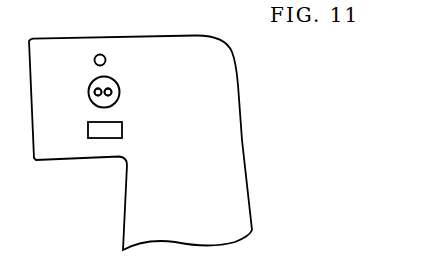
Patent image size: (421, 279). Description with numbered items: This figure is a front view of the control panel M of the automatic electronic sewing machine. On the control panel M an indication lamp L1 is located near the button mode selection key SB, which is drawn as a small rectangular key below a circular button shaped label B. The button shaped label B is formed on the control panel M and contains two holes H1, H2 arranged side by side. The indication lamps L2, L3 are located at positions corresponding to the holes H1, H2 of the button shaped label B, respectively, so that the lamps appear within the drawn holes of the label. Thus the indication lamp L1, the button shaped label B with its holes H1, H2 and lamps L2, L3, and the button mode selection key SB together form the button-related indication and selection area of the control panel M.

The control panel M is at (240, 136).
The indication lamp L1 is at (106, 59).
The indication lamp L2 is at (112, 89).
The indication lamp L3 is at (92, 88).
The hole H1 is at (95, 92).
The hole H2 is at (112, 94).
The button shaped label B is at (116, 102).
The button mode selection key SB is at (122, 128).